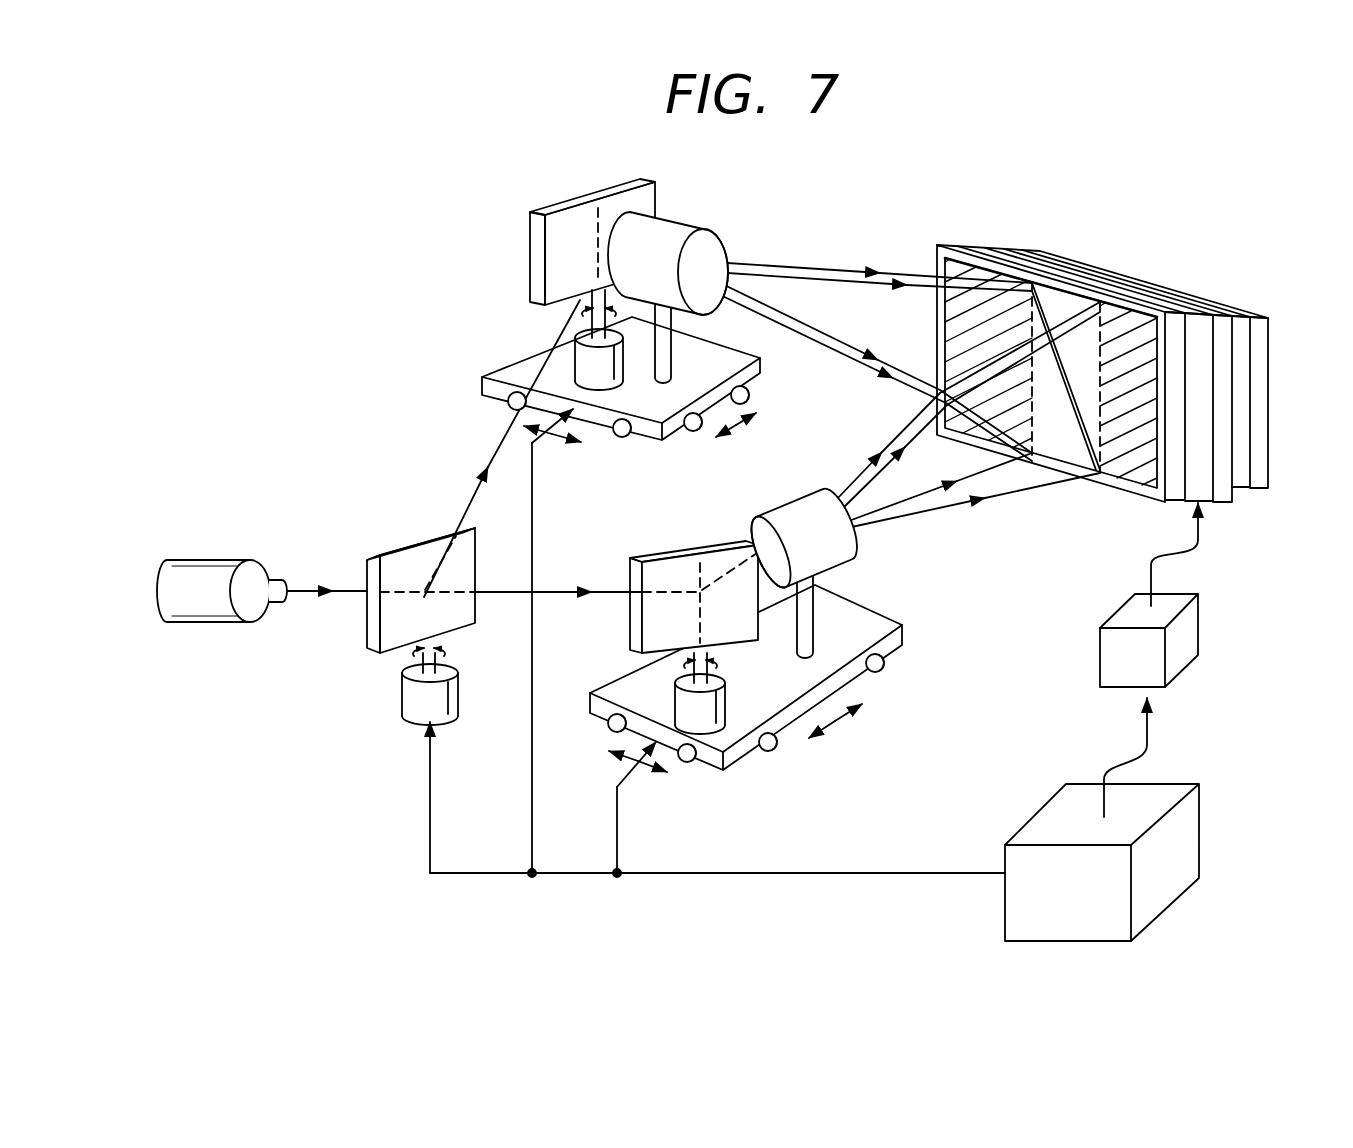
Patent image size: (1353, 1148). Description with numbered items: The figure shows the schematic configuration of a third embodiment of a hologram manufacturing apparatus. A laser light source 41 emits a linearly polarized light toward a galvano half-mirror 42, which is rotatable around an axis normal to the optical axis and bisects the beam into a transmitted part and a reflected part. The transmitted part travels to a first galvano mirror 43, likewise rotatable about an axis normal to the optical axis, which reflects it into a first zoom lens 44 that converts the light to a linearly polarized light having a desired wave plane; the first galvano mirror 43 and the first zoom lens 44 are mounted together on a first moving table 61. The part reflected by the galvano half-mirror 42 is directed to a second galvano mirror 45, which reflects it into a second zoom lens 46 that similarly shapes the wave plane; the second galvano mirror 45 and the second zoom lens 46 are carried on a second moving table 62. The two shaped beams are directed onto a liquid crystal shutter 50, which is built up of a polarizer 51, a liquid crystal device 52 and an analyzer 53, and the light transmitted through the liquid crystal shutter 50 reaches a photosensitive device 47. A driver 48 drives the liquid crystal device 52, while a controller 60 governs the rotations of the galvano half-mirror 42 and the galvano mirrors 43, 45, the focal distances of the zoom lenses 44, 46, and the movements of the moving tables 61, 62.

The laser light source 41 is at (237, 567).
The galvano half-mirror 42 is at (405, 560).
The first galvano mirror 43 is at (680, 570).
The first zoom lens 44 is at (785, 522).
The second galvano mirror 45 is at (578, 218).
The second zoom lens 46 is at (712, 240).
The photosensitive device 47 is at (1258, 378).
The driver 48 is at (1185, 628).
The liquid crystal shutter 50 is at (1137, 320).
The polarizer 51 is at (1173, 352).
The liquid crystal device 52 is at (1202, 433).
The analyzer 53 is at (1222, 494).
The controller 60 is at (1183, 824).
The first moving table 61 is at (880, 626).
The second moving table 62 is at (513, 368).